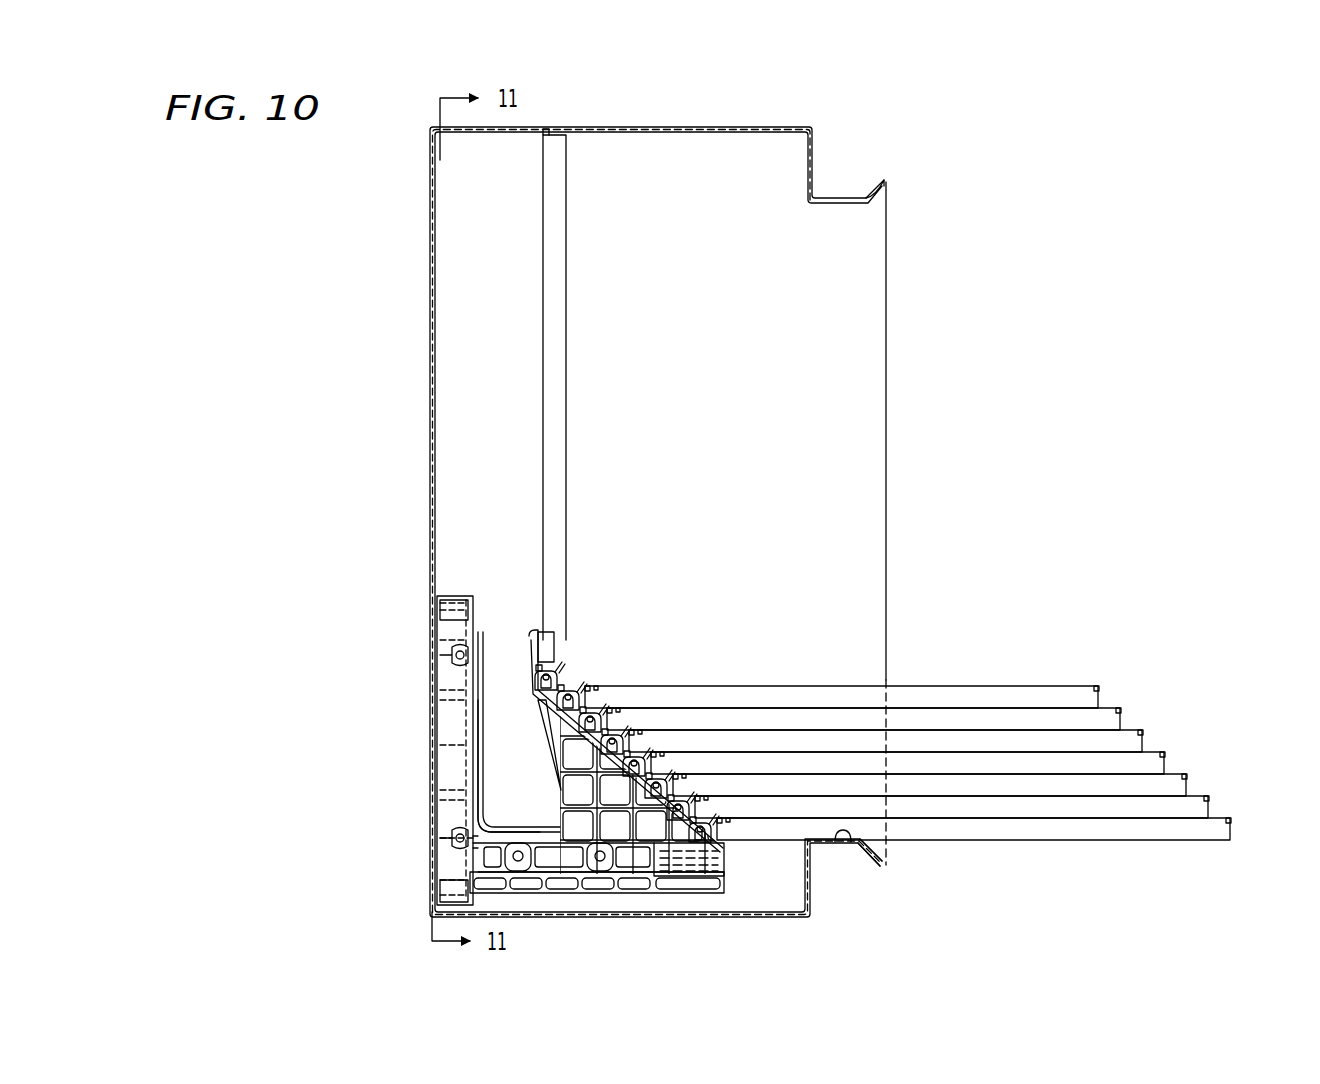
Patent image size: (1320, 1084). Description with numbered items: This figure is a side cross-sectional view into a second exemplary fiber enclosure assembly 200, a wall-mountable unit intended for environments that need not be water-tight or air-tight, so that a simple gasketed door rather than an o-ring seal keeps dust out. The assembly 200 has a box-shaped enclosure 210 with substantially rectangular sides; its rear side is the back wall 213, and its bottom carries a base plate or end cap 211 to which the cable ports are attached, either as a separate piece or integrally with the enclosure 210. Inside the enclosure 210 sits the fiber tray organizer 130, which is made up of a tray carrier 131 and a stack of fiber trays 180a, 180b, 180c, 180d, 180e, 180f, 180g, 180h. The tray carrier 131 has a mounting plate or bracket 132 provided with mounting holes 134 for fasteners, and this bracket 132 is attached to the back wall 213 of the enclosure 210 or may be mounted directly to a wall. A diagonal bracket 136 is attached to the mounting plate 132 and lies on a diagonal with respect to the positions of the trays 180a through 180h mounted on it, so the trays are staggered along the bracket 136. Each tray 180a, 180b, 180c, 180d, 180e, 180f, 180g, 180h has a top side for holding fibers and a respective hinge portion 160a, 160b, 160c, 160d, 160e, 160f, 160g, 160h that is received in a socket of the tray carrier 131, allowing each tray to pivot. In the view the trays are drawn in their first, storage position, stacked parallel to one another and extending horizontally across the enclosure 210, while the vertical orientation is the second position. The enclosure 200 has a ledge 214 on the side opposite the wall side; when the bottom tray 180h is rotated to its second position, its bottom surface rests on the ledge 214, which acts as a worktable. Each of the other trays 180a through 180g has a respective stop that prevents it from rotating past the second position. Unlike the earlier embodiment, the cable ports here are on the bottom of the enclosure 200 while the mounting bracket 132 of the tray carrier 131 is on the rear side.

The fiber tray organizer 130 is at (670, 620).
The tray carrier 131 is at (555, 774).
The mounting plate 132 is at (470, 596).
The mounting holes 134 is at (458, 620).
The diagonal bracket 136 is at (552, 709).
The hinge portion 160a is at (560, 660).
The hinge portion 160b is at (588, 700).
The hinge portion 160c is at (610, 718).
The hinge portion 160d is at (632, 742).
The hinge portion 160e is at (658, 763).
The hinge portion 160f is at (680, 785).
The hinge portion 160g is at (704, 806).
The hinge portion 160h is at (735, 832).
The fiber tray 180a is at (566, 403).
The fiber tray 180b is at (1060, 686).
The fiber tray 180c is at (1115, 708).
The fiber tray 180d is at (1142, 730).
The fiber tray 180e is at (1164, 752).
The fiber tray 180f is at (1186, 774).
The fiber tray 180g is at (1208, 796).
The bottom fiber tray 180h is at (1230, 818).
The fiber enclosure assembly 200 is at (960, 309).
The enclosure 210 is at (888, 422).
The base plate 211 is at (850, 247).
The back wall 213 is at (433, 335).
The ledge 214 is at (843, 842).